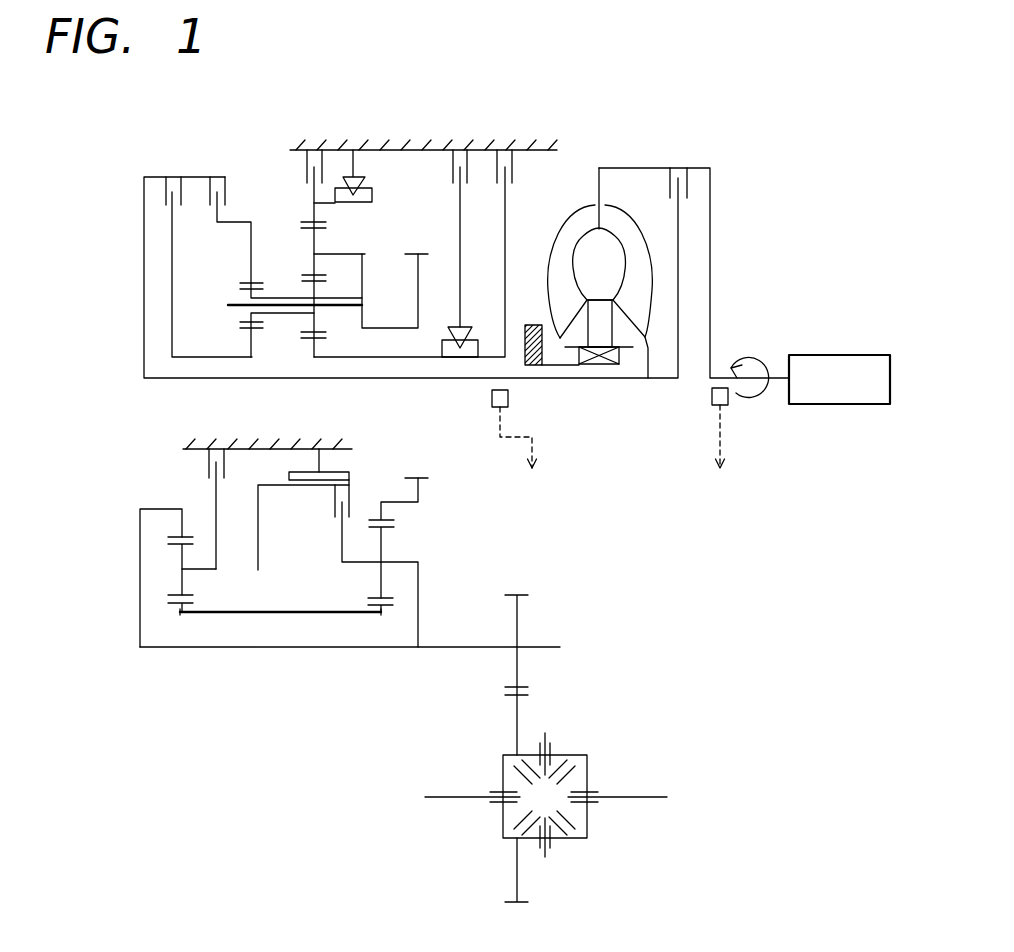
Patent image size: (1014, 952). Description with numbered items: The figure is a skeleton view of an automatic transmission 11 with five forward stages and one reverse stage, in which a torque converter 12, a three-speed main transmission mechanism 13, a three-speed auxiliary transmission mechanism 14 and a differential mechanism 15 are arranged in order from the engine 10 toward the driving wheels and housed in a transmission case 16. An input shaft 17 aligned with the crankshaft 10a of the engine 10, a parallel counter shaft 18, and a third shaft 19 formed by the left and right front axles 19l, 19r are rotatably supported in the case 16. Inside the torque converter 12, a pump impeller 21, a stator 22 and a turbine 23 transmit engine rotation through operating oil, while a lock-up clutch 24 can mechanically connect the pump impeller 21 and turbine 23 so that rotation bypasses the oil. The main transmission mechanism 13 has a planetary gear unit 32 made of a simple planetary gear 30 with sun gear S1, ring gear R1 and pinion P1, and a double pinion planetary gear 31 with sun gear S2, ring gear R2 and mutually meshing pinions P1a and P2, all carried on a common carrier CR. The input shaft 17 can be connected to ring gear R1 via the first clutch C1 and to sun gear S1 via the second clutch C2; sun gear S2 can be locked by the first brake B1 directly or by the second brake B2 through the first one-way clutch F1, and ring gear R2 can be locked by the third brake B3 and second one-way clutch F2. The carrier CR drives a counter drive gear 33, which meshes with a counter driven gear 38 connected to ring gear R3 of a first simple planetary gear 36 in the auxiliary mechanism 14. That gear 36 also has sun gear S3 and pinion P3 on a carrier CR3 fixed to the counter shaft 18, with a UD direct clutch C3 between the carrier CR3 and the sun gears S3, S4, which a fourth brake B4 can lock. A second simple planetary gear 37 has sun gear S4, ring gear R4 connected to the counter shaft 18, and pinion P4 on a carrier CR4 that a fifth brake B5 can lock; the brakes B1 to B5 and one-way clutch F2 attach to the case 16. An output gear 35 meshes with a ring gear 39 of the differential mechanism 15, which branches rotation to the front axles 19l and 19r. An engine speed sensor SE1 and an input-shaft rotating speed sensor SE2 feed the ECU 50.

The engine 10 is at (845, 355).
The crankshaft 10a is at (710, 243).
The automatic transmission 11 is at (203, 132).
The torque converter 12 is at (632, 158).
The three-speed main transmission mechanism 13 is at (98, 177).
The three-speed auxiliary transmission mechanism 14 is at (95, 467).
The differential mechanism 15 is at (637, 678).
The transmission case 16 is at (408, 150).
The input shaft 17 is at (570, 379).
The counter shaft 18 is at (270, 647).
The third shaft 19 is at (595, 823).
The left front axle 19l is at (445, 797).
The right front axle 19r is at (650, 797).
The pump impeller 21 is at (568, 218).
The stator 22 is at (619, 352).
The turbine 23 is at (645, 230).
The lock-up clutch 24 is at (687, 190).
The simple planetary gear 30 is at (237, 211).
The double pinion planetary gear 31 is at (298, 213).
The planetary gear unit 32 is at (288, 112).
The counter drive gear 33 is at (428, 254).
The output gear 35 is at (518, 595).
The first simple planetary gear 36 is at (377, 618).
The second simple planetary gear 37 is at (185, 618).
The counter driven gear 38 is at (428, 478).
The ring gear 39 is at (517, 712).
The ECU 50 is at (616, 453).
The first clutch C1 is at (228, 216).
The second clutch C2 is at (206, 253).
The UD direct clutch C3 is at (338, 559).
The first brake B1 is at (505, 147).
The second brake B2 is at (460, 219).
The third brake B3 is at (312, 234).
The fourth brake B4 is at (318, 441).
The fifth brake B5 is at (215, 489).
The first one-way clutch F1 is at (466, 327).
The second one-way clutch F2 is at (343, 157).
The ring gear R1 is at (250, 257).
The ring gear R2 is at (317, 210).
The ring gear R3 is at (388, 512).
The ring gear R4 is at (180, 523).
The pinion P1 is at (250, 296).
The pinion P1a is at (390, 291).
The pinion P2 is at (313, 260).
The pinion P3 is at (377, 582).
The pinion P4 is at (180, 555).
The sun gear S1 is at (248, 350).
The sun gear S2 is at (316, 351).
The sun gear S3 is at (377, 610).
The sun gear S4 is at (196, 610).
The common carrier CR is at (371, 258).
The carrier CR3 is at (418, 583).
The carrier CR4 is at (216, 500).
The engine speed sensor SE1 is at (728, 397).
The input-shaft rotating speed sensor SE2 is at (492, 398).